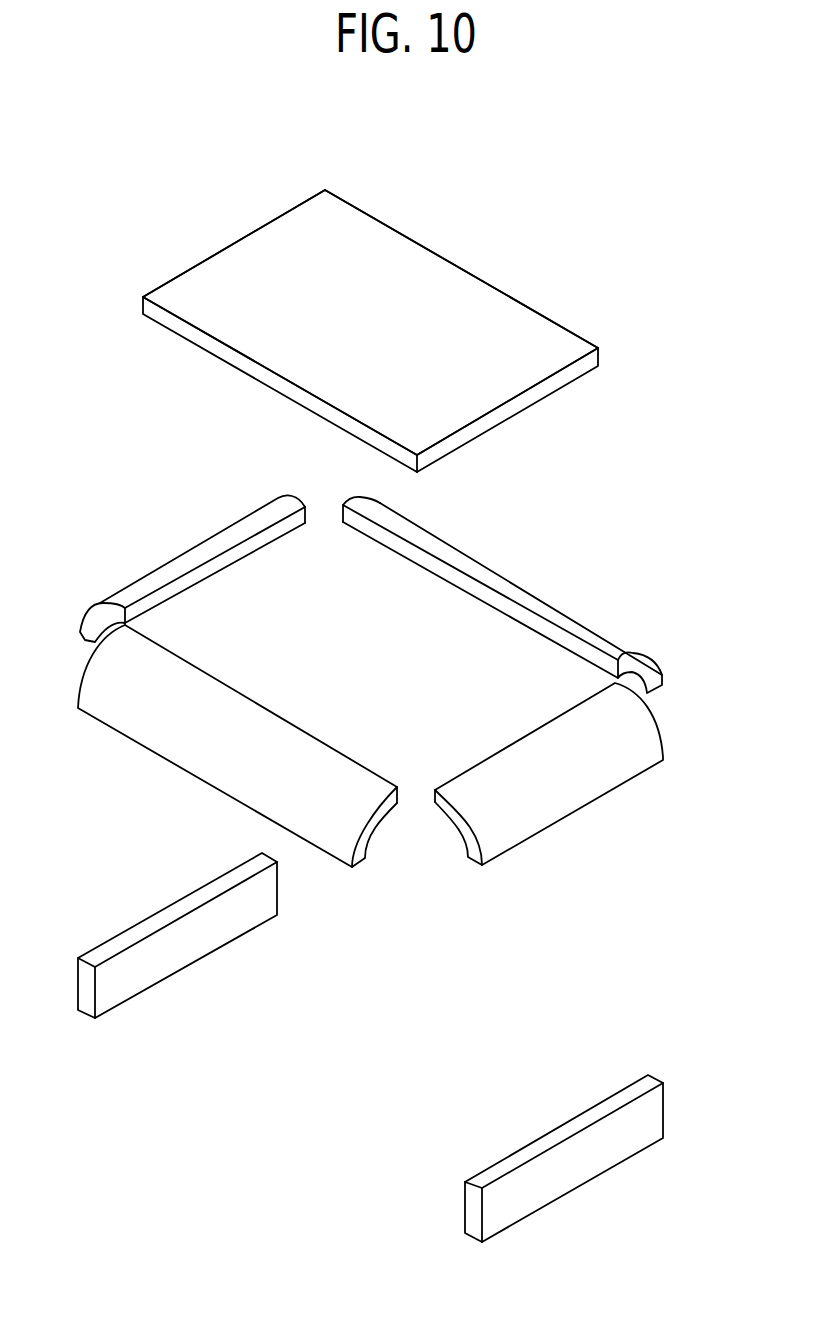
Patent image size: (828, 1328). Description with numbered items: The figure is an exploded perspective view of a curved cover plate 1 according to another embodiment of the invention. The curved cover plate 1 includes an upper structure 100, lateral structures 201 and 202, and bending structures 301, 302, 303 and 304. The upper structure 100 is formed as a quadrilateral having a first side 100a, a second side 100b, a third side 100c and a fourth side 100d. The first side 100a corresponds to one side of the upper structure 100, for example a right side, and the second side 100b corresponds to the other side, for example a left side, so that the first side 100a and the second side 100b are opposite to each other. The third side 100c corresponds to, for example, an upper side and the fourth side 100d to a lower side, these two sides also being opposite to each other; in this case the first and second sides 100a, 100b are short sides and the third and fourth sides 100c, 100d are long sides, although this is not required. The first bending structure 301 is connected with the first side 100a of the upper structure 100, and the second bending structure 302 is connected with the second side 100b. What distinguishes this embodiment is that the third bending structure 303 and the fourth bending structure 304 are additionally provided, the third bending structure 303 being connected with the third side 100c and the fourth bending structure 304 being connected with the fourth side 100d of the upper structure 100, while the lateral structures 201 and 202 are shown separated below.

The curved cover plate 1 is at (604, 193).
The upper structure 100 is at (548, 333).
The first side 100a is at (518, 403).
The second side 100b is at (203, 260).
The third side 100c is at (465, 268).
The fourth side 100d is at (273, 383).
The lateral structure 201 is at (573, 1178).
The lateral structure 202 is at (187, 955).
The first bending structure 301 is at (568, 807).
The second bending structure 302 is at (187, 562).
The third bending structure 303 is at (510, 585).
The fourth bending structure 304 is at (220, 780).